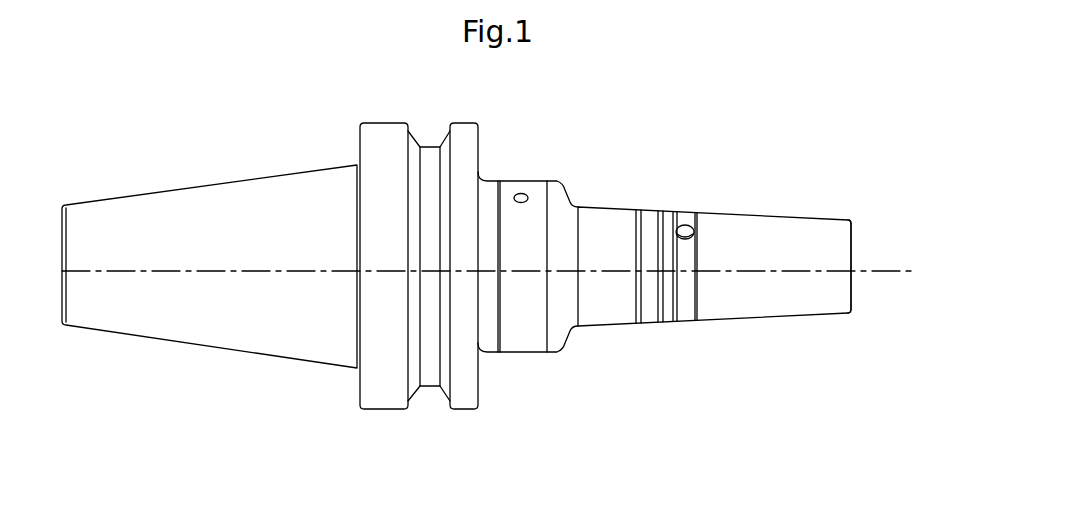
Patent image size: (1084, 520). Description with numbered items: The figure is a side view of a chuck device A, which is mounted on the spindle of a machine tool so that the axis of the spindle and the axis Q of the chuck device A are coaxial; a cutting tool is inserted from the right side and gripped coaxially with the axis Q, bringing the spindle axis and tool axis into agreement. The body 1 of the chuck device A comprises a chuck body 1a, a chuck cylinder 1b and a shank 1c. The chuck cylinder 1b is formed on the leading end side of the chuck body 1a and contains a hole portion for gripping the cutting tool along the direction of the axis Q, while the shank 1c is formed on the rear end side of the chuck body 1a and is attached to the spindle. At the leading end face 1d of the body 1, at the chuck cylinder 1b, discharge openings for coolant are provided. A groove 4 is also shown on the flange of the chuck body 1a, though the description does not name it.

The body 1 is at (517, 181).
The chuck body 1a is at (412, 271).
The chuck cylinder 1b is at (762, 223).
The shank 1c is at (205, 333).
The leading end face 1d is at (852, 295).
The V-groove of flange 4 is at (428, 158).
The chuck device A is at (740, 148).
The axis Q is at (499, 274).